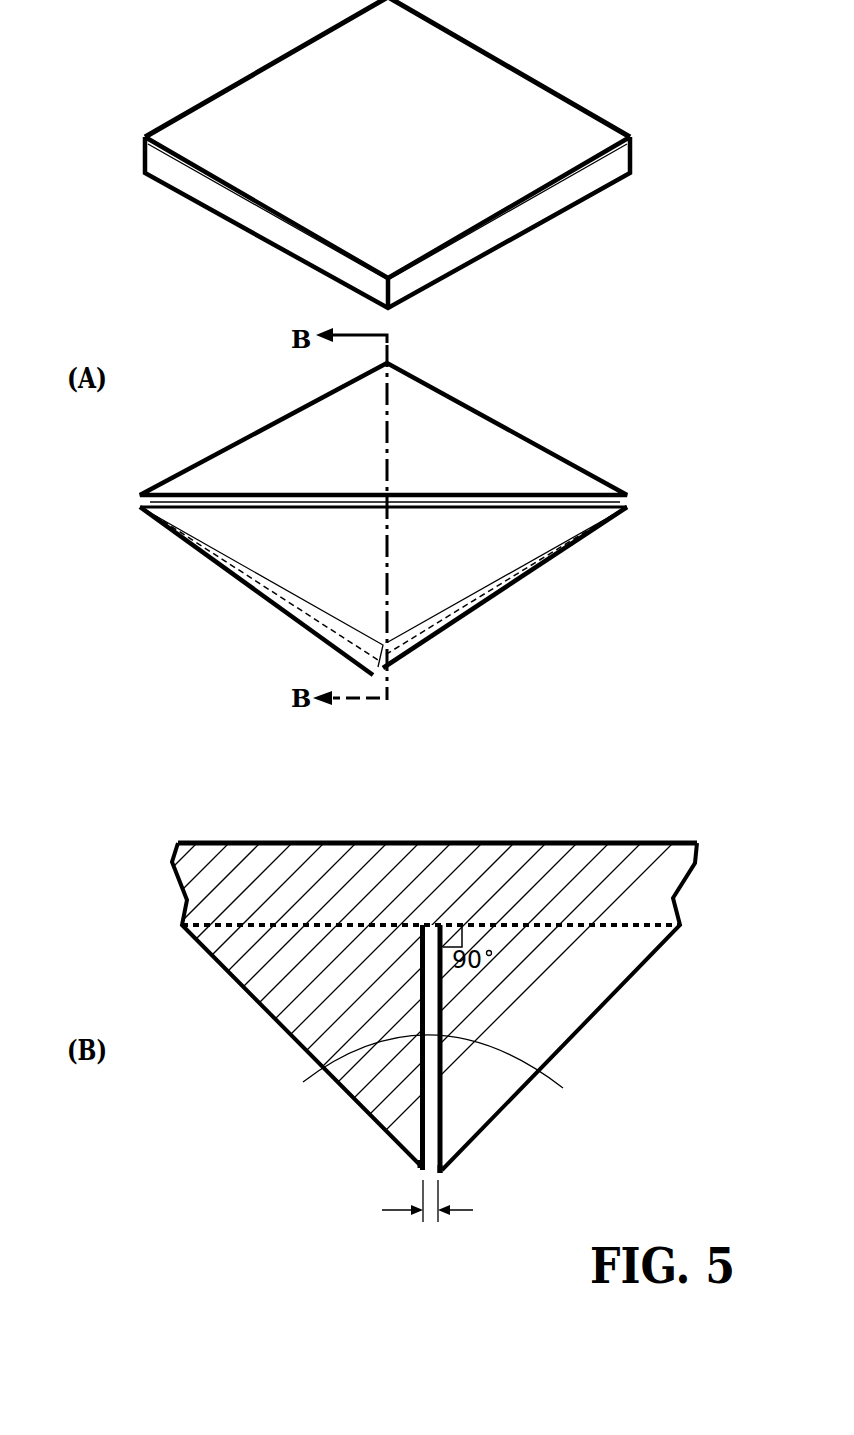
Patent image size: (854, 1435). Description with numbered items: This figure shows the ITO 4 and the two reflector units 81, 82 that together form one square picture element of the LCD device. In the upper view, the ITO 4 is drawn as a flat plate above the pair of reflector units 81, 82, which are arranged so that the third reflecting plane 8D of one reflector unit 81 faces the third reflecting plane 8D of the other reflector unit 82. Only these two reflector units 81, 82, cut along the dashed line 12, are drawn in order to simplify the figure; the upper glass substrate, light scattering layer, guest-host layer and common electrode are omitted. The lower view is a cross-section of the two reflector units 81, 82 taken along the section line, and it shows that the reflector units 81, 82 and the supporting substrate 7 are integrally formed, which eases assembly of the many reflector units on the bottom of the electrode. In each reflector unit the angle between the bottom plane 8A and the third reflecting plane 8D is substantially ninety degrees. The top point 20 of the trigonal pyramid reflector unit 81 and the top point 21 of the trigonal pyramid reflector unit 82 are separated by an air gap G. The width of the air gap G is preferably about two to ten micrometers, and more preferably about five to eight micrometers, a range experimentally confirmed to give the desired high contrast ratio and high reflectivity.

The ITO 4 is at (543, 115).
The supporting substrate 7 is at (712, 843).
The bottom plane 8A is at (357, 922).
The third reflecting plane 8D is at (310, 1078).
The dashed line 12 is at (637, 928).
The top point 20 is at (418, 1170).
The top point 21 is at (443, 1172).
The reflector unit 81 is at (505, 455).
The reflector unit 82 is at (510, 537).
The air gap G is at (428, 1218).